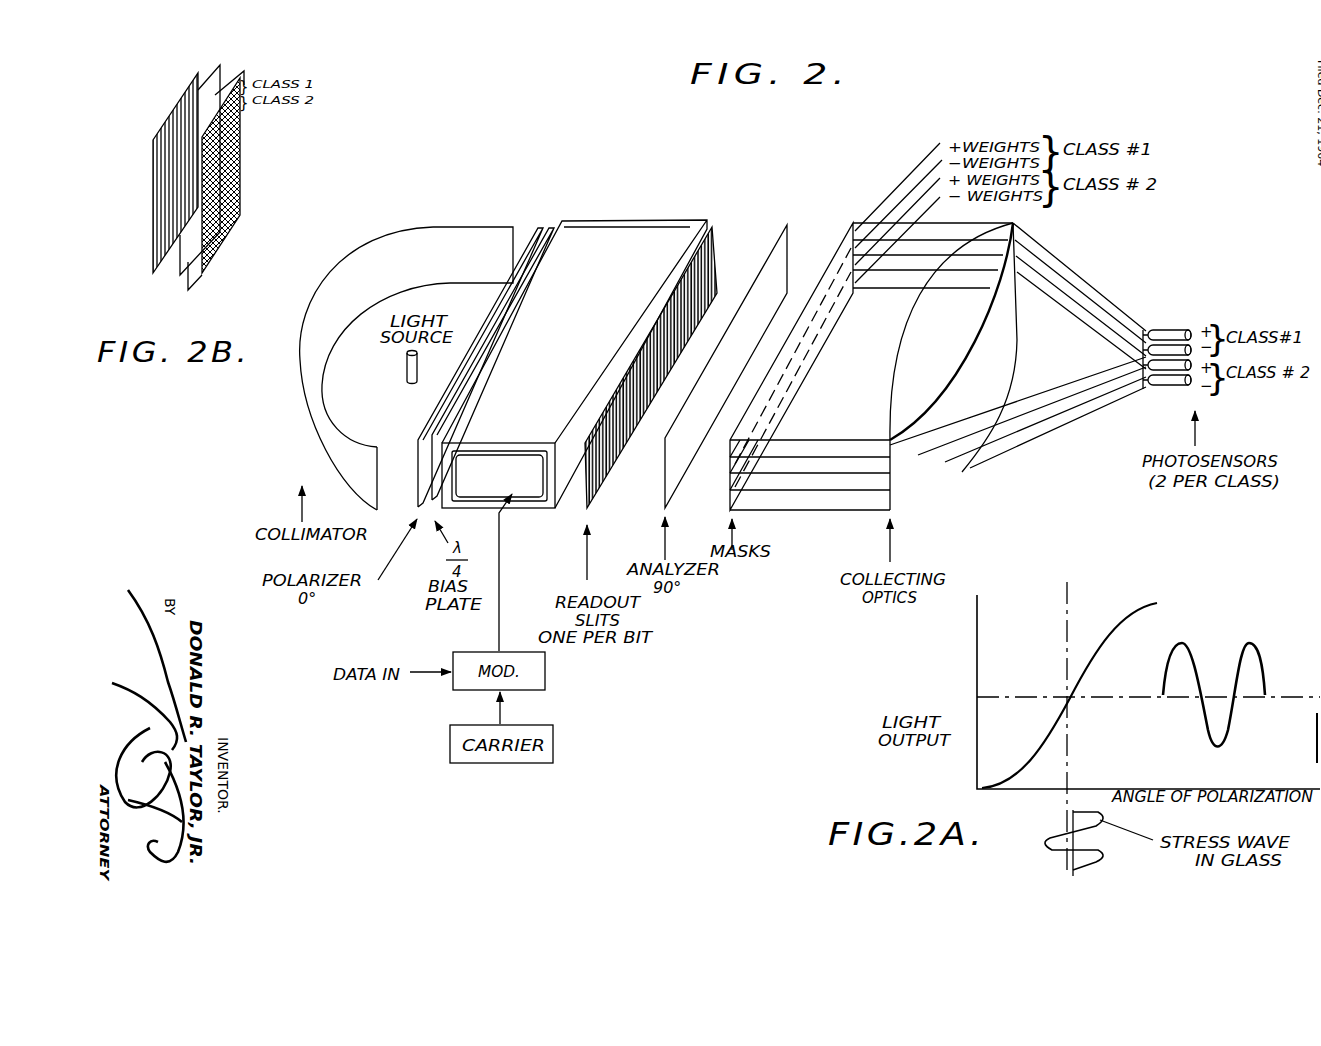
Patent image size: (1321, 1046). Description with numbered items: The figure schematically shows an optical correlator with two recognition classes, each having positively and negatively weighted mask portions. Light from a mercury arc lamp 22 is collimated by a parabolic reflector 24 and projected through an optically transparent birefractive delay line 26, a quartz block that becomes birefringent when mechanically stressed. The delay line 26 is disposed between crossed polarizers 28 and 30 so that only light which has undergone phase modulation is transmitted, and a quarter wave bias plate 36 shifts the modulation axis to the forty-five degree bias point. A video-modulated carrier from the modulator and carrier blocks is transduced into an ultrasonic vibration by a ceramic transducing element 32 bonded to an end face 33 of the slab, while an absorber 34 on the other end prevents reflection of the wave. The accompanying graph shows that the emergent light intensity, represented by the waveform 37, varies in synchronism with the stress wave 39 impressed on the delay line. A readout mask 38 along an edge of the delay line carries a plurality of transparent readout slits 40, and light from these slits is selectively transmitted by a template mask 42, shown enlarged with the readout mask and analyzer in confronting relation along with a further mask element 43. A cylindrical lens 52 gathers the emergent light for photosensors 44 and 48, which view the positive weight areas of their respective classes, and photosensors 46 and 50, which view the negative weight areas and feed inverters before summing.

In FIG. 2, the mercury arc lamp 22 is at (406, 358).
In FIG. 2, the parabolic reflector 24 is at (393, 233).
In FIG. 2, the birefractive delay line 26 is at (623, 260).
In FIG. 2, the polarizer 28 is at (538, 228).
In FIG. 2, the polarizer 30 is at (786, 226).
In FIG. 2B, the polarizer 30 is at (180, 273).
In FIG. 2, the ceramic transducing element 32 is at (530, 490).
In FIG. 2, the end face 33 is at (452, 462).
In FIG. 2, the absorber 34 is at (613, 221).
In FIG. 2, the quarter wave bias plate 36 is at (553, 228).
In FIG. 2A, the waveform 37 is at (1260, 658).
In FIG. 2, the readout mask 38 is at (710, 228).
In FIG. 2B, the readout mask 38 is at (198, 70).
In FIG. 2A, the stress wave 39 is at (1043, 838).
In FIG. 2, the readout slits 40 is at (697, 288).
In FIG. 2B, the readout slits 40 is at (162, 240).
In FIG. 2, the template mask 42 is at (843, 240).
In FIG. 2B, the template mask 42 is at (242, 187).
In FIG. 2B, the second mask 43 is at (188, 288).
In FIG. 2, the photosensor 44 is at (1165, 330).
In FIG. 2, the photosensor 46 is at (1185, 344).
In FIG. 2, the photosensor 48 is at (1175, 371).
In FIG. 2, the photosensor 50 is at (1160, 387).
In FIG. 2, the cylindrical lens 52 is at (1003, 243).